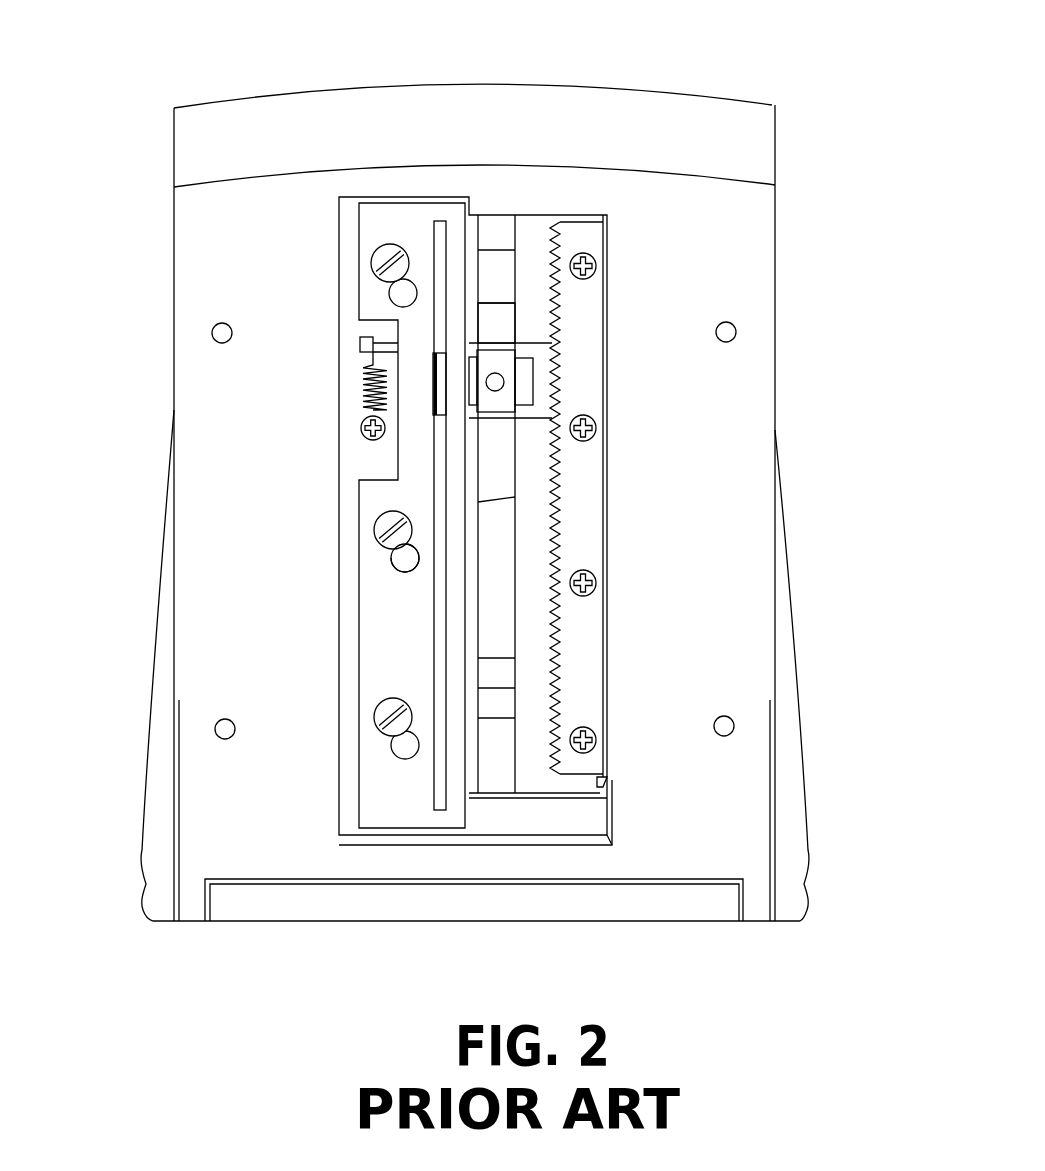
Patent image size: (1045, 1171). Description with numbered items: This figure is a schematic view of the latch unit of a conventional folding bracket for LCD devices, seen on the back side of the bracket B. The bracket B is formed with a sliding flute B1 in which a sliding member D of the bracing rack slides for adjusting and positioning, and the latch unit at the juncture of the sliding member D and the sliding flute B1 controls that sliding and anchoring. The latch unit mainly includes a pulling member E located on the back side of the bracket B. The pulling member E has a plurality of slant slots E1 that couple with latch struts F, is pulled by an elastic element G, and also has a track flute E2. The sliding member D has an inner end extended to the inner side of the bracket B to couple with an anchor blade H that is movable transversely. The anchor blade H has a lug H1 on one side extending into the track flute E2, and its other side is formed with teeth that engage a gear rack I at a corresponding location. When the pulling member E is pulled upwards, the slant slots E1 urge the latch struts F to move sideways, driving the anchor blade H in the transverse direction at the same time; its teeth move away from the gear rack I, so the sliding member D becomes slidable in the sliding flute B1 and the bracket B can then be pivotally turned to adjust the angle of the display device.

The bracket B is at (690, 605).
The sliding flute B1 is at (507, 318).
The sliding member D is at (500, 462).
The pulling member E is at (395, 623).
The slant slots E1 is at (400, 562).
The track flute E2 is at (440, 523).
The latch struts F is at (380, 522).
The elastic element G is at (358, 385).
The anchor blade H is at (545, 396).
The lug H1 is at (438, 360).
The gear rack I is at (580, 365).